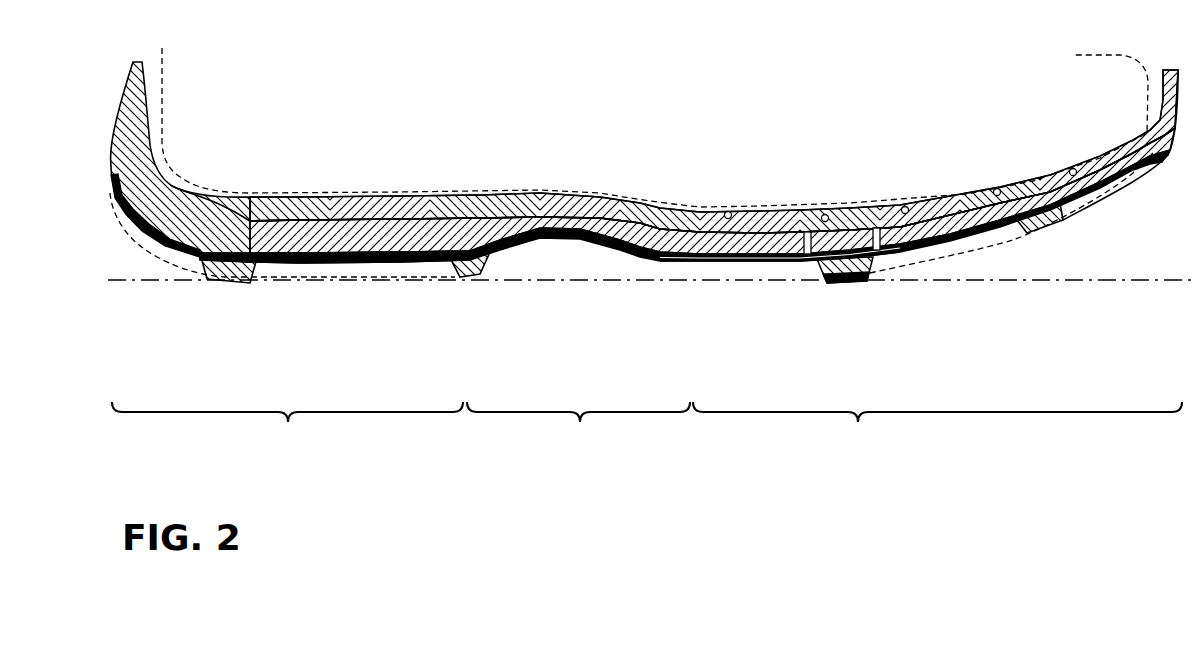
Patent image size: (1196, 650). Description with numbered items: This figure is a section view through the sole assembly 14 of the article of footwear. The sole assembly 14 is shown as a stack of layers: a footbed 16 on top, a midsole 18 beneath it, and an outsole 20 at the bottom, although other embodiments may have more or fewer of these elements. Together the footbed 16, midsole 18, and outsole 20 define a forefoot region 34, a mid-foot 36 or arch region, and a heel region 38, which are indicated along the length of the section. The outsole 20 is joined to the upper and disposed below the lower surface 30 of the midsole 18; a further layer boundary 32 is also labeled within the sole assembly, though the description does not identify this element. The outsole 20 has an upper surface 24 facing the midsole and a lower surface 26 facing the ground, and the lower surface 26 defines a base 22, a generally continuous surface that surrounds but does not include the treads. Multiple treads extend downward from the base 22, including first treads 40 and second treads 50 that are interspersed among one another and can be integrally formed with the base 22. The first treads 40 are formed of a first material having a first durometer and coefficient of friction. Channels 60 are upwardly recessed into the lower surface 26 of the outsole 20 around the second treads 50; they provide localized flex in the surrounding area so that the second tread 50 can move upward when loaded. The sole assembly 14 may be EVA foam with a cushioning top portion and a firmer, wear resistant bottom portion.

The sole assembly 14 is at (385, 194).
The footbed 16 is at (513, 217).
The midsole 18 is at (688, 264).
The outsole 20 is at (773, 272).
The base 22 is at (717, 263).
The upper surface 24 is at (887, 250).
The lower surface 26 is at (907, 253).
The lower surface 30 is at (337, 256).
The midsole interface 32 is at (330, 219).
The forefoot region 34 is at (937, 426).
The mid-foot region 36 is at (578, 426).
The heel region 38 is at (287, 426).
The first treads 40 is at (210, 270).
The second treads 50 is at (825, 283).
The channels 60 is at (807, 247).